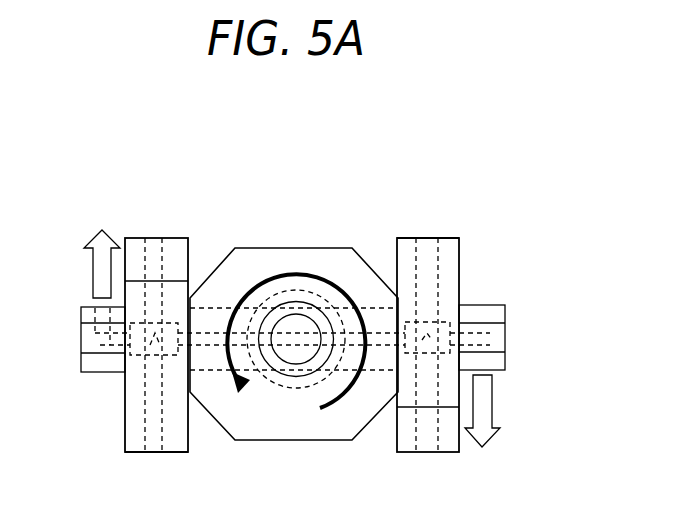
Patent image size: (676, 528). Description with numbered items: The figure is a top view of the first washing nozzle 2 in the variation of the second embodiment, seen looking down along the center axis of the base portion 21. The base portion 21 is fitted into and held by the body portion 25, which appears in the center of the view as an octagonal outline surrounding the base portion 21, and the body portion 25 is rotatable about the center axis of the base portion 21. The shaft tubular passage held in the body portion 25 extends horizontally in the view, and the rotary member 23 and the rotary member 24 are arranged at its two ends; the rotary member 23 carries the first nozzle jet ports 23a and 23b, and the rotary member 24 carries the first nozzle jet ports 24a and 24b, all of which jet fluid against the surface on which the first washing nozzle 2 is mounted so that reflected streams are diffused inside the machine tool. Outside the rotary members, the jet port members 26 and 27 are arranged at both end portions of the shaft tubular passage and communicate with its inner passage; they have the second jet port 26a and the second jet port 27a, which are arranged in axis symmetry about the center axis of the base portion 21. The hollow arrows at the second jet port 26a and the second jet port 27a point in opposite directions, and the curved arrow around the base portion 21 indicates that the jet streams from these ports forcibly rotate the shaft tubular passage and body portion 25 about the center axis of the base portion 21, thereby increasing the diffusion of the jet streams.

The first washing nozzle 2 is at (335, 329).
The base portion 21 is at (300, 306).
The rotary member 23 is at (456, 332).
The first nozzle jet port 23a is at (445, 199).
The first nozzle jet port 23b is at (444, 455).
The rotary member 24 is at (190, 323).
The first nozzle jet port 24a is at (168, 220).
The first nozzle jet port 24b is at (178, 461).
The body portion 25 is at (305, 304).
The jet port member 26 is at (511, 302).
The second jet port 26a is at (515, 405).
The jet port member 27 is at (83, 376).
The second jet port 27a is at (81, 263).